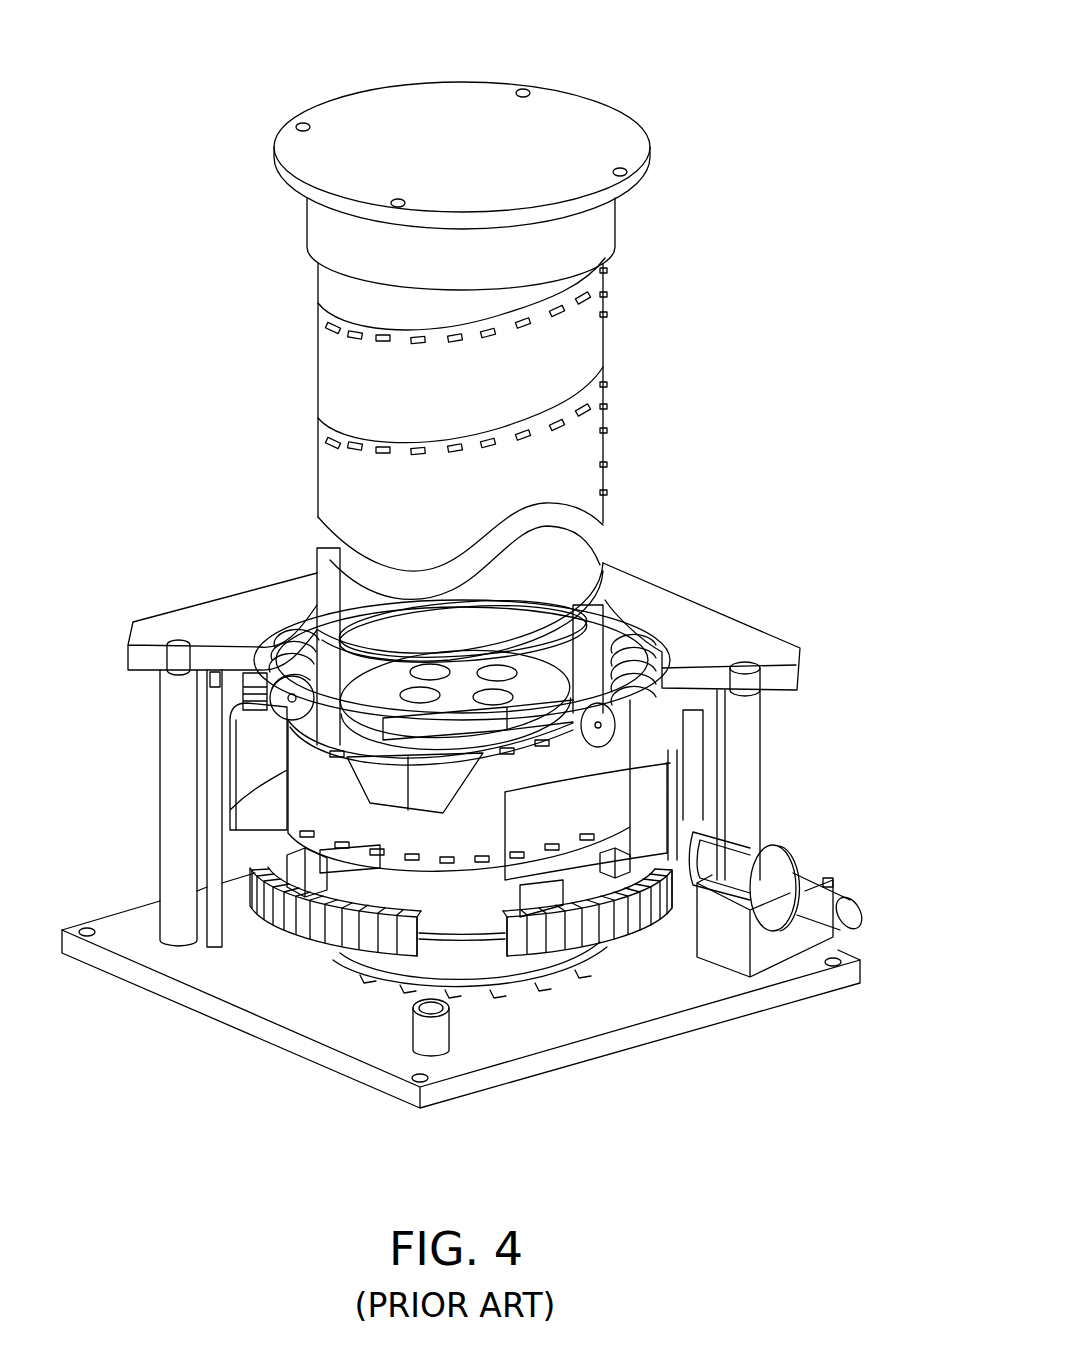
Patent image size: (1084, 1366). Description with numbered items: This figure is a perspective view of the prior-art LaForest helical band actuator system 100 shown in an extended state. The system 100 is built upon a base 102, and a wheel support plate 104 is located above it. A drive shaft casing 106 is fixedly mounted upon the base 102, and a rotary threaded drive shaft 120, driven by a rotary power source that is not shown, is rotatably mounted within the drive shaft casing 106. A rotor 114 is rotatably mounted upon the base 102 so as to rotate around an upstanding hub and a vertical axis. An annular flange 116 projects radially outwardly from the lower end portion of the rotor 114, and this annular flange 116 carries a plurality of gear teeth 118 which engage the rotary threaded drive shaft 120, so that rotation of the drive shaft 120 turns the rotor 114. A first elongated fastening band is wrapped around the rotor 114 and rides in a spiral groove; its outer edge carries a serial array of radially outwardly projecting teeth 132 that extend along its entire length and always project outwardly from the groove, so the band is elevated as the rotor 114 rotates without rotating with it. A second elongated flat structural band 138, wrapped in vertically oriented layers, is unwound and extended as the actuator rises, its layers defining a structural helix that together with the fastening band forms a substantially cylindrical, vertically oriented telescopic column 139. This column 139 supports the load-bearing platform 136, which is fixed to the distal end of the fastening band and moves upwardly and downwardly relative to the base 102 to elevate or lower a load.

The helical band actuator system 100 is at (720, 397).
The base 102 is at (543, 1060).
The wheel support plate 104 is at (728, 640).
The drive shaft casing 106 is at (805, 942).
The rotor 114 is at (367, 890).
The annular flange 116 is at (375, 912).
The gear teeth 118 is at (283, 910).
The rotary threaded drive shaft 120 is at (735, 858).
The radially outwardly projecting teeth 132 is at (420, 455).
The load-bearing platform 136 is at (540, 130).
The second elongated flat structural band 138 is at (348, 360).
The telescopic column 139 is at (607, 306).